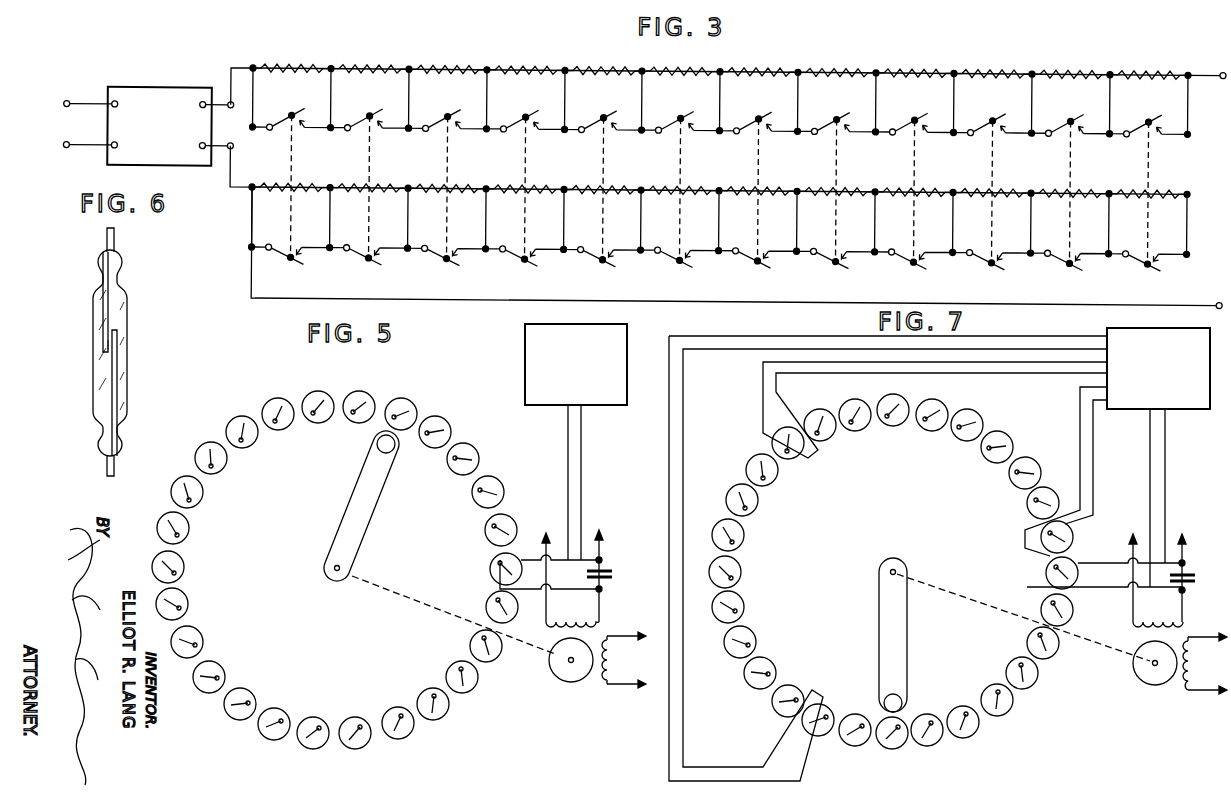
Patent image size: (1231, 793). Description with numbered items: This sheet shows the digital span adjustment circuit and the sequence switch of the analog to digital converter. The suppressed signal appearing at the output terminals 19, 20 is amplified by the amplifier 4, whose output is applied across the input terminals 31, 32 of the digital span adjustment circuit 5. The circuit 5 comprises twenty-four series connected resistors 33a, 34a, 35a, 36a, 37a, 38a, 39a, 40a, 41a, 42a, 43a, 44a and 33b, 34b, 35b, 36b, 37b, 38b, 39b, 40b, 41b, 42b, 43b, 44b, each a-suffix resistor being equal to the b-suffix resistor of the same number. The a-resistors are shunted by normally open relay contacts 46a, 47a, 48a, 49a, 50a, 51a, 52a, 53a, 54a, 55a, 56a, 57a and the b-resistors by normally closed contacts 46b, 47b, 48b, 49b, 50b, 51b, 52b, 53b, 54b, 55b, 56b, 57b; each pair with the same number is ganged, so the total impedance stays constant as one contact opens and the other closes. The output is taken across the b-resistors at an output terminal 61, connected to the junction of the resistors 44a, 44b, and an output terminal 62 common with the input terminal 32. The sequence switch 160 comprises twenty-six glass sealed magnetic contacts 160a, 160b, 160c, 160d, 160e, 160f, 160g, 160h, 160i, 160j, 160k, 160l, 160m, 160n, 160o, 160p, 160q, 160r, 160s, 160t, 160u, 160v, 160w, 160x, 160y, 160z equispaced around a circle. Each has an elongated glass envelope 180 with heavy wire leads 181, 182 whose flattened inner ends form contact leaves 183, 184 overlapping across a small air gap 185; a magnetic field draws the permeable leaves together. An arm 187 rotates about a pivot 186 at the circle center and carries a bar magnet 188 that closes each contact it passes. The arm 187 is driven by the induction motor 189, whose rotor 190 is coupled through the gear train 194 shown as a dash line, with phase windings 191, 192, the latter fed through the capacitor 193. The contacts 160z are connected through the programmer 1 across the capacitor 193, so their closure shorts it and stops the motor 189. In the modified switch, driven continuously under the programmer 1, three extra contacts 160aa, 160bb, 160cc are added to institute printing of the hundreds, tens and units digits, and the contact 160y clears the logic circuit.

In FIG. 5, the programmer 1 is at (525, 335).
In FIG. 7, the programmer 1 is at (1184, 409).
In FIG. 3, the amplifier 4 is at (152, 97).
In FIG. 3, the digital span adjustment circuit 5 is at (411, 60).
In FIG. 3, the output terminal 19 is at (65, 101).
In FIG. 3, the output terminal 20 is at (66, 149).
In FIG. 3, the input terminal 31 is at (230, 101).
In FIG. 3, the input terminal 32 is at (230, 150).
In FIG. 3, the resistor 33a is at (302, 62).
In FIG. 3, the resistor 34a is at (380, 62).
In FIG. 3, the resistor 35a is at (458, 62).
In FIG. 3, the resistor 36a is at (536, 62).
In FIG. 3, the resistor 37a is at (614, 62).
In FIG. 3, the resistor 38a is at (691, 62).
In FIG. 3, the resistor 39a is at (769, 62).
In FIG. 3, the resistor 40a is at (847, 62).
In FIG. 3, the resistor 41a is at (925, 62).
In FIG. 3, the resistor 42a is at (1003, 62).
In FIG. 3, the resistor 43a is at (1081, 62).
In FIG. 3, the resistor 44a is at (1159, 62).
In FIG. 3, the resistor 33b is at (311, 184).
In FIG. 3, the resistor 34b is at (389, 184).
In FIG. 3, the resistor 35b is at (467, 184).
In FIG. 3, the resistor 36b is at (545, 184).
In FIG. 3, the resistor 37b is at (623, 184).
In FIG. 3, the resistor 38b is at (700, 184).
In FIG. 3, the resistor 39b is at (778, 184).
In FIG. 3, the resistor 40b is at (856, 184).
In FIG. 3, the resistor 41b is at (934, 184).
In FIG. 3, the resistor 42b is at (1012, 184).
In FIG. 3, the resistor 43b is at (1090, 184).
In FIG. 3, the resistor 44b is at (1168, 184).
In FIG. 3, the normally open relay contact 46a is at (315, 102).
In FIG. 3, the normally open relay contact 47a is at (393, 102).
In FIG. 3, the normally open relay contact 48a is at (471, 102).
In FIG. 3, the normally open relay contact 49a is at (549, 102).
In FIG. 3, the normally open relay contact 50a is at (627, 102).
In FIG. 3, the normally open relay contact 51a is at (704, 102).
In FIG. 3, the normally open relay contact 52a is at (782, 102).
In FIG. 3, the normally open relay contact 53a is at (860, 102).
In FIG. 3, the normally open relay contact 54a is at (938, 102).
In FIG. 3, the normally open relay contact 55a is at (1016, 102).
In FIG. 3, the normally open relay contact 56a is at (1094, 102).
In FIG. 3, the normally open relay contact 57a is at (1172, 102).
In FIG. 3, the normally closed relay contact 46b is at (305, 259).
In FIG. 3, the normally closed relay contact 47b is at (383, 259).
In FIG. 3, the normally closed relay contact 48b is at (461, 259).
In FIG. 3, the normally closed relay contact 49b is at (539, 259).
In FIG. 3, the normally closed relay contact 50b is at (617, 259).
In FIG. 3, the normally closed relay contact 51b is at (694, 259).
In FIG. 3, the normally closed relay contact 52b is at (772, 259).
In FIG. 3, the normally closed relay contact 53b is at (850, 259).
In FIG. 3, the normally closed relay contact 54b is at (928, 259).
In FIG. 3, the normally closed relay contact 55b is at (1006, 259).
In FIG. 3, the normally closed relay contact 56b is at (1084, 259).
In FIG. 3, the normally closed relay contact 57b is at (1162, 259).
In FIG. 3, the output terminal 61 is at (1223, 65).
In FIG. 3, the output terminal 62 is at (1221, 295).
In FIG. 5, the sequence switch 160 is at (272, 390).
In FIG. 7, the sequence switch 160 is at (745, 466).
In FIG. 5, the glass sealed magnetic contact 160a is at (487, 602).
In FIG. 7, the glass sealed magnetic contact 160a is at (1041, 604).
In FIG. 5, the glass sealed magnetic contact 160b is at (472, 638).
In FIG. 7, the glass sealed magnetic contact 160b is at (1027, 641).
In FIG. 5, the glass sealed magnetic contact 160c is at (450, 671).
In FIG. 7, the glass sealed magnetic contact 160c is at (1011, 663).
In FIG. 5, the glass sealed magnetic contact 160d is at (447, 712).
In FIG. 7, the glass sealed magnetic contact 160d is at (1011, 710).
In FIG. 5, the glass sealed magnetic contact 160e is at (413, 733).
In FIG. 7, the glass sealed magnetic contact 160e is at (976, 732).
In FIG. 5, the glass sealed magnetic contact 160f is at (359, 749).
In FIG. 7, the glass sealed magnetic contact 160f is at (940, 746).
In FIG. 5, the glass sealed magnetic contact 160g is at (311, 748).
In FIG. 7, the glass sealed magnetic contact 160g is at (900, 716).
In FIG. 5, the glass sealed magnetic contact 160h is at (259, 736).
In FIG. 7, the glass sealed magnetic contact 160h is at (860, 747).
In FIG. 5, the glass sealed magnetic contact 160i is at (225, 712).
In FIG. 7, the glass sealed magnetic contact 160i is at (771, 707).
In FIG. 5, the glass sealed magnetic contact 160j is at (220, 670).
In FIG. 7, the glass sealed magnetic contact 160j is at (772, 666).
In FIG. 5, the glass sealed magnetic contact 160k is at (200, 637).
In FIG. 7, the glass sealed magnetic contact 160k is at (756, 638).
In FIG. 5, the glass sealed magnetic contact 160l is at (188, 603).
In FIG. 7, the glass sealed magnetic contact 160l is at (745, 605).
In FIG. 5, the glass sealed magnetic contact 160m is at (184, 569).
In FIG. 7, the glass sealed magnetic contact 160m is at (742, 573).
In FIG. 5, the glass sealed magnetic contact 160n is at (189, 530).
In FIG. 7, the glass sealed magnetic contact 160n is at (744, 535).
In FIG. 5, the glass sealed magnetic contact 160o is at (203, 499).
In FIG. 7, the glass sealed magnetic contact 160o is at (759, 501).
In FIG. 5, the glass sealed magnetic contact 160p is at (222, 470).
In FIG. 7, the glass sealed magnetic contact 160p is at (777, 479).
In FIG. 5, the glass sealed magnetic contact 160q is at (235, 420).
In FIG. 7, the glass sealed magnetic contact 160q is at (835, 438).
In FIG. 5, the glass sealed magnetic contact 160r is at (271, 400).
In FIG. 7, the glass sealed magnetic contact 160r is at (854, 401).
In FIG. 5, the glass sealed magnetic contact 160s is at (318, 391).
In FIG. 7, the glass sealed magnetic contact 160s is at (894, 397).
In FIG. 5, the glass sealed magnetic contact 160t is at (359, 391).
In FIG. 7, the glass sealed magnetic contact 160t is at (937, 402).
In FIG. 5, the glass sealed magnetic contact 160u is at (397, 398).
In FIG. 7, the glass sealed magnetic contact 160u is at (976, 416).
In FIG. 5, the glass sealed magnetic contact 160v is at (435, 416).
In FIG. 7, the glass sealed magnetic contact 160v is at (1009, 438).
In FIG. 5, the glass sealed magnetic contact 160w is at (471, 446).
In FIG. 7, the glass sealed magnetic contact 160w is at (1008, 476).
In FIG. 5, the glass sealed magnetic contact 160x is at (472, 497).
In FIG. 7, the glass sealed magnetic contact 160x is at (1026, 503).
In FIG. 5, the glass sealed magnetic contact 160y is at (485, 530).
In FIG. 7, the glass sealed magnetic contact 160y is at (1045, 570).
In FIG. 5, the glass sealed magnetic contact 160z is at (490, 569).
In FIG. 7, the additional magnetic contact 160aa is at (820, 704).
In FIG. 7, the additional magnetic contact 160bb is at (802, 456).
In FIG. 7, the additional magnetic contact 160cc is at (1074, 538).
In FIG. 6, the glass envelope 180 is at (128, 323).
In FIG. 6, the wire lead 181 is at (105, 237).
In FIG. 6, the wire lead 182 is at (106, 464).
In FIG. 6, the contact leaf 183 is at (101, 323).
In FIG. 6, the contact leaf 184 is at (118, 385).
In FIG. 6, the air gap 185 is at (108, 360).
In FIG. 5, the pivot 186 is at (338, 576).
In FIG. 7, the pivot 186 is at (891, 566).
In FIG. 5, the arm 187 is at (349, 502).
In FIG. 7, the arm 187 is at (879, 607).
In FIG. 5, the bar magnet 188 is at (377, 441).
In FIG. 7, the bar magnet 188 is at (884, 703).
In FIG. 5, the induction motor 189 is at (579, 689).
In FIG. 7, the induction motor 189 is at (1162, 690).
In FIG. 5, the rotor 190 is at (564, 676).
In FIG. 7, the rotor 190 is at (1150, 679).
In FIG. 5, the phase winding 191 is at (612, 660).
In FIG. 7, the phase winding 191 is at (1194, 662).
In FIG. 5, the phase winding 192 is at (565, 622).
In FIG. 7, the phase winding 192 is at (1153, 622).
In FIG. 5, the capacitor 193 is at (612, 577).
In FIG. 7, the capacitor 193 is at (1194, 576).
In FIG. 5, the gear train 194 is at (410, 601).
In FIG. 7, the gear train 194 is at (977, 602).